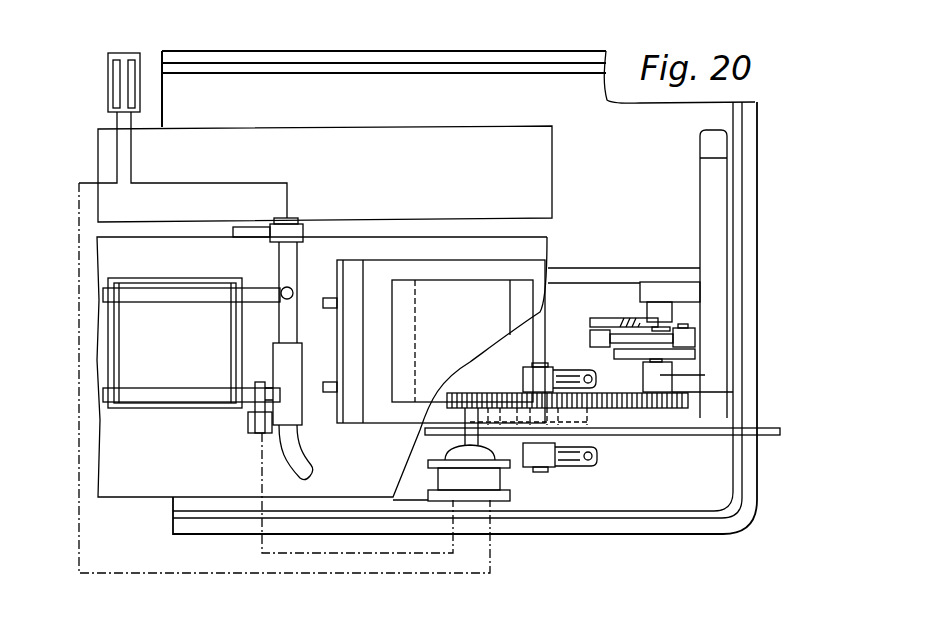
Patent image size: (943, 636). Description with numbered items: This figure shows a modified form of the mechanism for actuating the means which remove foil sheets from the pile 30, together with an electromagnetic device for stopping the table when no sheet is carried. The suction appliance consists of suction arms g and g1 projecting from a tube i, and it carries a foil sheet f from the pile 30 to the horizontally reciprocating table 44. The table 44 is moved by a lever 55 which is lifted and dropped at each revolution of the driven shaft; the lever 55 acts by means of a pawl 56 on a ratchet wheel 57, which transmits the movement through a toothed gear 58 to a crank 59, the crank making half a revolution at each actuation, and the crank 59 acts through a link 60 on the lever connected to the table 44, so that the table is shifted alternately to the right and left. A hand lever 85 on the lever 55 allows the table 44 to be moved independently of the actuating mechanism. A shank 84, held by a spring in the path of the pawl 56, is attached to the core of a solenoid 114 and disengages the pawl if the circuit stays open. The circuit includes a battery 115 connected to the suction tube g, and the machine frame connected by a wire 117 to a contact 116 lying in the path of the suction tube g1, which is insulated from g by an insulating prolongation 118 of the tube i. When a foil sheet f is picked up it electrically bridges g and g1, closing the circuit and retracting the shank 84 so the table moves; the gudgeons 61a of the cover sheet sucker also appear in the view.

The pile 30 is at (118, 328).
The table 44 is at (350, 278).
The lever 55 is at (517, 437).
The pawl 56 is at (455, 397).
The ratchet wheel 57 is at (600, 415).
The toothed gear 58 is at (512, 400).
The crank 59 is at (638, 352).
The link 60 is at (635, 338).
The gudgeons 61a is at (623, 318).
The shank 84 is at (465, 438).
The hand lever 85 is at (730, 436).
The solenoid 114 is at (469, 454).
The battery 115 is at (108, 80).
The contact 116 is at (259, 382).
The wire 117 is at (262, 546).
The insulating prolongation 118 is at (290, 391).
The foil sheet f is at (175, 343).
The suction arm g is at (192, 296).
The suction tube g1 is at (170, 395).
The tube i is at (291, 268).